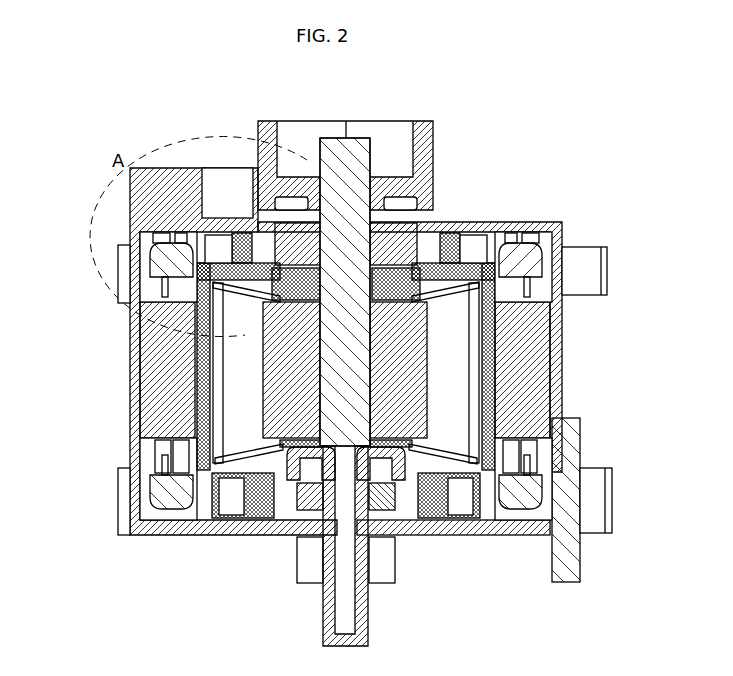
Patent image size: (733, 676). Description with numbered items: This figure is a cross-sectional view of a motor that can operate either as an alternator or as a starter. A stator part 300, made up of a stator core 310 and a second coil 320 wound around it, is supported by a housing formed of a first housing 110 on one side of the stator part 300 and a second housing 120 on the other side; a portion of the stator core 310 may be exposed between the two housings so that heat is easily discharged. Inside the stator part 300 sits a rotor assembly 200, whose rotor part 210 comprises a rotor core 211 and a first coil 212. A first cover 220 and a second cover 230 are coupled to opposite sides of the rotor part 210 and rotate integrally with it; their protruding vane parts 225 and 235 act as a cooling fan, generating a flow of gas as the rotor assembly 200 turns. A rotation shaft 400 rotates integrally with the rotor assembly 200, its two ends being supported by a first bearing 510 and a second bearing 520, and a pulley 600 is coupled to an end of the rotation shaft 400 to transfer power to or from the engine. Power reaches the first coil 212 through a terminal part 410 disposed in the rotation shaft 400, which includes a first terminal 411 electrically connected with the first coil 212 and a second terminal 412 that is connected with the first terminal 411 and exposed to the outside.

The first housing 110 is at (557, 220).
The second housing 120 is at (570, 562).
The rotor assembly 200 is at (544, 422).
The rotor part 210 is at (521, 366).
The rotor core 211 is at (560, 373).
The first coil 212 is at (562, 331).
The first cover 220 is at (603, 283).
The vane part 225 is at (463, 243).
The second cover 230 is at (612, 486).
The vane part 235 is at (466, 536).
The stator part 300 is at (112, 411).
The stator core 310 is at (140, 407).
The second coil 320 is at (135, 479).
The rotation shaft 400 is at (333, 152).
The terminal part 410 is at (295, 546).
The first terminal 411 is at (267, 537).
The second terminal 412 is at (322, 607).
The first bearing 510 is at (393, 178).
The second bearing 520 is at (383, 540).
The pulley 600 is at (437, 165).